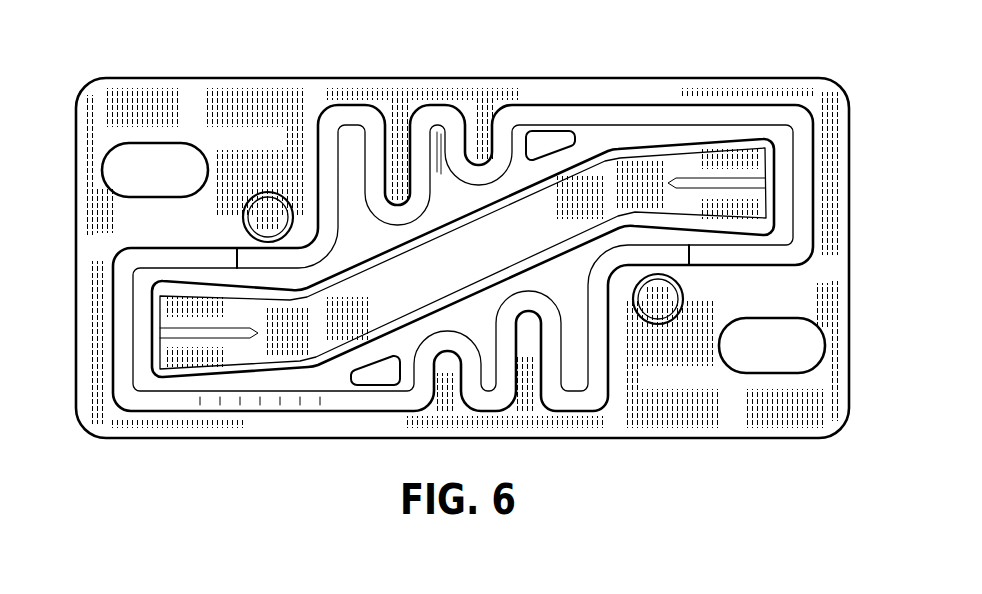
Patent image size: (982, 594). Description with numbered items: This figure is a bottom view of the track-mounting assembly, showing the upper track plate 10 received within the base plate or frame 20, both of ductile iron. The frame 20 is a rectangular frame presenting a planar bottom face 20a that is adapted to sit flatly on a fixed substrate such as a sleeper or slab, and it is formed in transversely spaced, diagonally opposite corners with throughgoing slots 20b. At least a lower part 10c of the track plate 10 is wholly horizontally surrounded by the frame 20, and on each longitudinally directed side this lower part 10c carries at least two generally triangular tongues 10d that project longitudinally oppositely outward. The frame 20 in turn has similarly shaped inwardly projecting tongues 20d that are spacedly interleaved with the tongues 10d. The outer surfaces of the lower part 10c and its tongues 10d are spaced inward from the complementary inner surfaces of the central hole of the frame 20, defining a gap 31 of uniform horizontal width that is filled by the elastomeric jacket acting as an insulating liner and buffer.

The track plate 10 is at (694, 123).
The lower part of the track plate 10c is at (511, 257).
The tongues of the track plate 10d is at (452, 138).
The base plate or frame 20 is at (391, 78).
The planar bottom face 20a is at (241, 92).
The throughgoing slots 20b is at (151, 160).
The inwardly projecting tongues of the frame plate 20d is at (400, 180).
The gap 31 is at (270, 406).